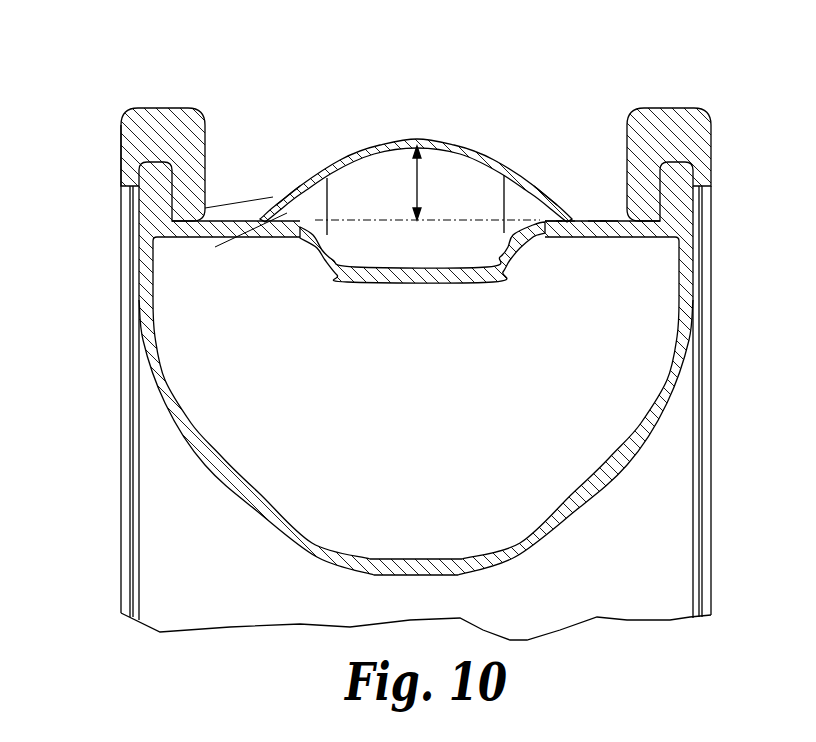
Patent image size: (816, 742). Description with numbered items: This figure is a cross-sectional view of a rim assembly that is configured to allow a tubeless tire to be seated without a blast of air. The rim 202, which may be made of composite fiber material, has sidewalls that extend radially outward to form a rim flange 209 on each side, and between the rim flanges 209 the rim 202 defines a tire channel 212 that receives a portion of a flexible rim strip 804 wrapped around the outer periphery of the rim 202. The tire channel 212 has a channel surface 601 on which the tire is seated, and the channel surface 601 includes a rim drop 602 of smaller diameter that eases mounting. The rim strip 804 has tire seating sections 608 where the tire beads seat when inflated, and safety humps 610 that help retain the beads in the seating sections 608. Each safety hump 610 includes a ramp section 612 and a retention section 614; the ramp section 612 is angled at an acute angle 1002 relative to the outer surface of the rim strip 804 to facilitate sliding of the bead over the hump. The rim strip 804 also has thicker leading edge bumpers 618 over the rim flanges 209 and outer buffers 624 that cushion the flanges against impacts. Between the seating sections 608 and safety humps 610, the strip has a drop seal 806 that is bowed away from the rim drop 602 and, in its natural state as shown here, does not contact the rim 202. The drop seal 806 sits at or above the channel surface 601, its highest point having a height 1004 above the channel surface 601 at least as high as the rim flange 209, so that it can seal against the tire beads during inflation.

The rim 202 is at (693, 308).
The rim flange 209 is at (682, 202).
The tire channel 212 is at (328, 134).
The channel surface 601 is at (606, 212).
The rim drop 602 is at (430, 265).
The tire seating section 608 is at (598, 212).
The safety hump 610 is at (560, 210).
The ramp section 612 is at (281, 198).
The retention section 614 is at (553, 205).
The leading edge bumper 618 is at (160, 122).
The outer buffer 624 is at (120, 137).
The rim strip 804 is at (675, 110).
The drop seal 806 is at (413, 138).
The acute angle 1002 is at (203, 236).
The height 1004 is at (427, 190).